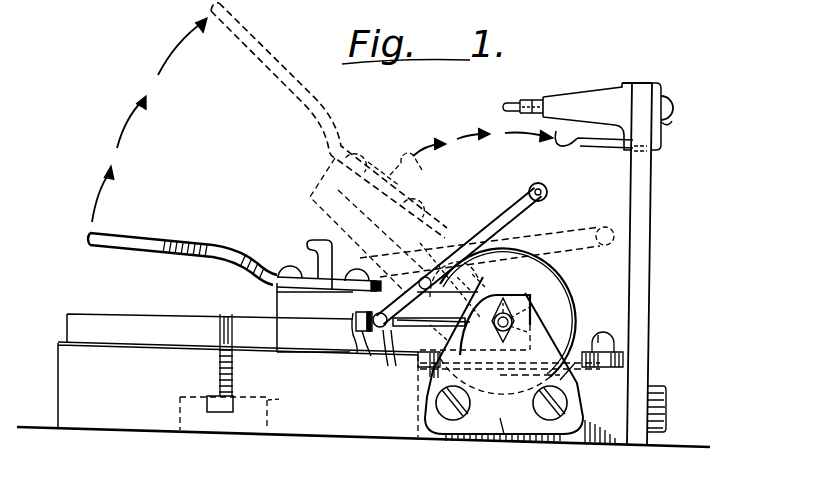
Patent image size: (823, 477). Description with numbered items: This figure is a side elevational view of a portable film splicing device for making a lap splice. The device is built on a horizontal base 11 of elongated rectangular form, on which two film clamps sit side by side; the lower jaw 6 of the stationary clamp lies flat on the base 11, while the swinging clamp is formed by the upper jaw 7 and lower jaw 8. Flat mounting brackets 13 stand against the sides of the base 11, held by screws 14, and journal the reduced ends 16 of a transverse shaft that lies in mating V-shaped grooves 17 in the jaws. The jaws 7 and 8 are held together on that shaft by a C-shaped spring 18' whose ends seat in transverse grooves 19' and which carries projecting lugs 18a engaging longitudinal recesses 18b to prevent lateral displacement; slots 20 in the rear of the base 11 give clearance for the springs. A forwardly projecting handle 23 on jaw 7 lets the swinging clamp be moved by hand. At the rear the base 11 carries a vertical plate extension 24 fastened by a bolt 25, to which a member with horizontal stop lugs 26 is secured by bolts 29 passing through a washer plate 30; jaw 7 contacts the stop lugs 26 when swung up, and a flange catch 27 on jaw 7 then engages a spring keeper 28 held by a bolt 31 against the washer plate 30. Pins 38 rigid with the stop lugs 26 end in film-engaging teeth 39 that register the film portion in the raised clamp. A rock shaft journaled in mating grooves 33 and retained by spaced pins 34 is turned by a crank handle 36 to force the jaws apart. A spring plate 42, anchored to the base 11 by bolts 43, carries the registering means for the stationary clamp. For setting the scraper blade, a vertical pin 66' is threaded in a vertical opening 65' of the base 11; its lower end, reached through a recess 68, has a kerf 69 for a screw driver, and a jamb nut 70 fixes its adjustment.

The lower jaw 6 is at (128, 326).
The upper jaw 7 is at (737, 362).
The lower jaw 8 is at (317, 197).
The base 11 is at (363, 394).
The mounting brackets 13 is at (500, 418).
The screws 14 is at (442, 438).
The reduced ends 16 is at (491, 332).
The V-shaped grooves 17 is at (530, 314).
The C-shaped spring 18' is at (523, 321).
The projecting lugs 18a is at (435, 315).
The longitudinal recesses 18b is at (510, 309).
The transverse grooves 19' is at (478, 283).
The slots 20 is at (417, 410).
The handle 23 is at (155, 245).
The extension 24 is at (640, 212).
The bolt 25 is at (666, 403).
The stop lugs 26 is at (595, 98).
The flange catch 27 is at (318, 245).
The spring keeper 28 is at (604, 147).
The bolts 29 is at (674, 103).
The washer plate 30 is at (658, 82).
The bolt 31 is at (673, 118).
The grooves 33 is at (357, 346).
The pins 34 is at (387, 362).
The handle 36 is at (489, 224).
The pins 38 is at (531, 100).
The film-engaging teeth 39 is at (512, 102).
The spring plate 42 is at (575, 363).
The bolts 43 is at (598, 335).
The vertical opening 65' is at (193, 371).
The vertical pin 66' is at (204, 330).
The recess 68 is at (270, 402).
The kerf 69 is at (220, 413).
The jamb nut 70 is at (243, 410).